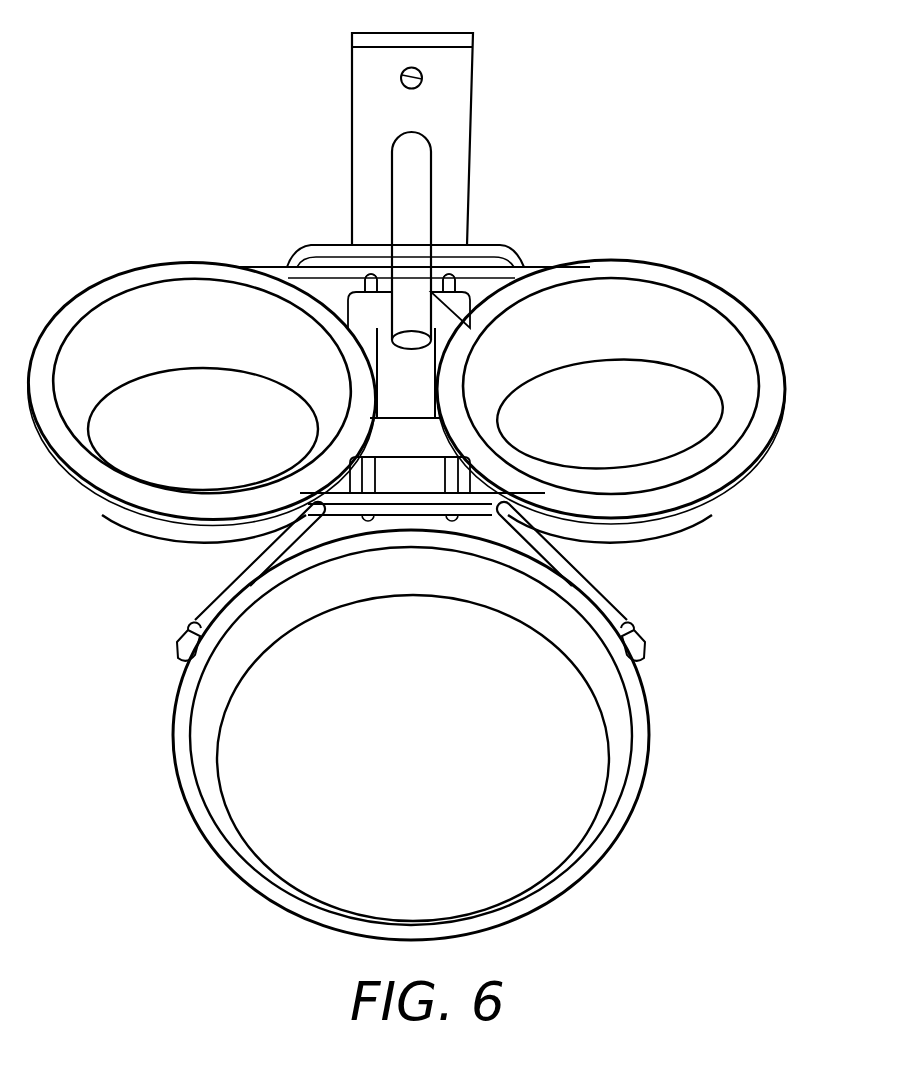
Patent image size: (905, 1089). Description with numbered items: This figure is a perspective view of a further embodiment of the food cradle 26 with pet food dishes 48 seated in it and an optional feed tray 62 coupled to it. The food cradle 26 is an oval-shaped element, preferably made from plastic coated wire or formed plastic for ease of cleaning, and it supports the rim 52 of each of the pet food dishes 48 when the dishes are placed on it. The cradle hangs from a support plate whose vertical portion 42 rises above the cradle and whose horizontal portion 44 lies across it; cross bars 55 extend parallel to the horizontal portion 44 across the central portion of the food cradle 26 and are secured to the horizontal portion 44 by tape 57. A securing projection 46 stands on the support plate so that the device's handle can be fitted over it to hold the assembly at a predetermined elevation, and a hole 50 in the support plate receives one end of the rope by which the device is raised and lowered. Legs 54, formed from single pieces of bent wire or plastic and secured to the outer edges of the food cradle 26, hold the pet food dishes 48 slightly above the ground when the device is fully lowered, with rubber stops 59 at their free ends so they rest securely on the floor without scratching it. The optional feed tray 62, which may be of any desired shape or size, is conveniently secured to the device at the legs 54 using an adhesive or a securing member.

The food cradle 26 is at (733, 487).
The vertical portion 42 is at (448, 117).
The horizontal portion 44 is at (413, 480).
The securing projection 46 is at (413, 193).
The pet food dishes 48 is at (642, 410).
The hole 50 is at (420, 80).
The rim 52 is at (720, 298).
The legs 54 is at (577, 565).
The cross bars 55 is at (366, 288).
The tape 57 is at (457, 303).
The rubber stops 59 is at (640, 637).
The feed tray 62 is at (493, 808).